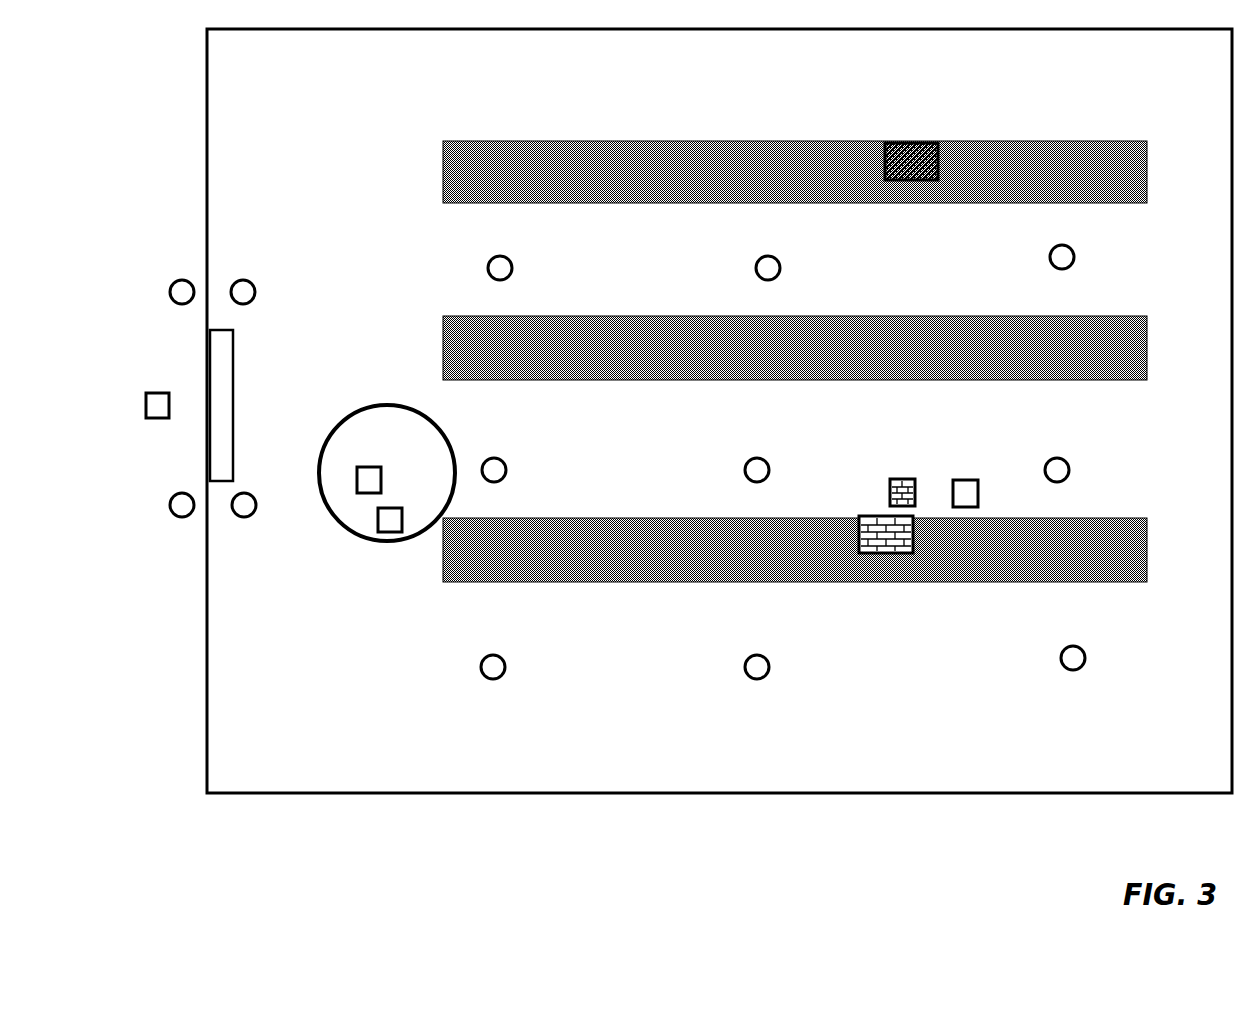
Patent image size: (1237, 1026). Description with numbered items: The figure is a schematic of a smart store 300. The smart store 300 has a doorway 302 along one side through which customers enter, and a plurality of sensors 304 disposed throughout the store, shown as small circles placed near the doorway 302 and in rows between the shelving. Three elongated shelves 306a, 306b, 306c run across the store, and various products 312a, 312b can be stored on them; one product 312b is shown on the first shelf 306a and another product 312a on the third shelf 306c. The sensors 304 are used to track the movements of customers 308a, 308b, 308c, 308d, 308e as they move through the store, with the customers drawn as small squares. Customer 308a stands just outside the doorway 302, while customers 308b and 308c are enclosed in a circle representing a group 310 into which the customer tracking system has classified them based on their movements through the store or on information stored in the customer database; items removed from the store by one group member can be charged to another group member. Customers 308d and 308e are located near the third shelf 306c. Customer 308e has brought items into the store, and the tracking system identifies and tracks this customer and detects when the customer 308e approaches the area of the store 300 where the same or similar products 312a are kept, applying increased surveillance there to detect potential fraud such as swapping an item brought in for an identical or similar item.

The smart store 300 is at (303, 90).
The doorway 302 is at (234, 395).
The sensors 304 is at (187, 279).
The shelf 306a is at (827, 190).
The shelf 306b is at (830, 367).
The shelf 306c is at (828, 567).
The customer 308a is at (160, 392).
The customer 308b is at (373, 465).
The customer 308c is at (393, 507).
The customer 308d is at (967, 479).
The customer 308e is at (902, 478).
The group 310 is at (383, 405).
The products 312a is at (860, 515).
The products 312b is at (887, 143).